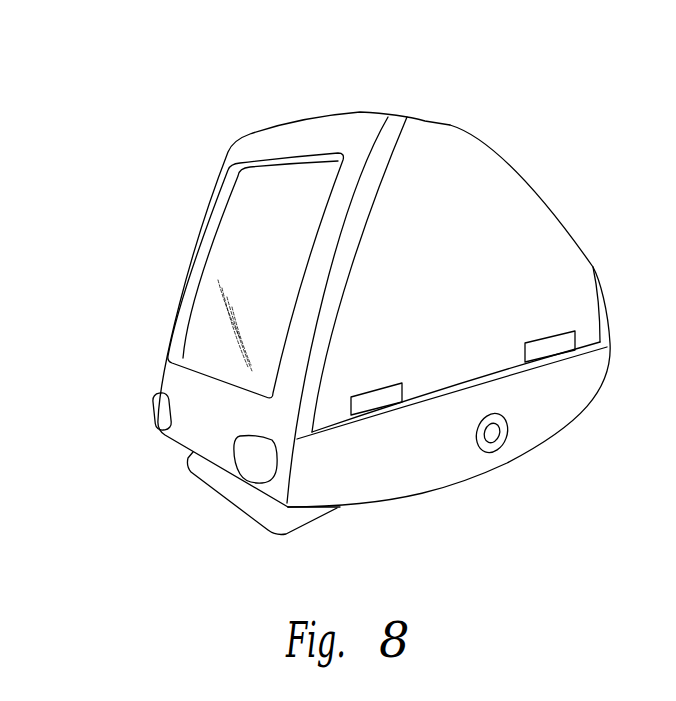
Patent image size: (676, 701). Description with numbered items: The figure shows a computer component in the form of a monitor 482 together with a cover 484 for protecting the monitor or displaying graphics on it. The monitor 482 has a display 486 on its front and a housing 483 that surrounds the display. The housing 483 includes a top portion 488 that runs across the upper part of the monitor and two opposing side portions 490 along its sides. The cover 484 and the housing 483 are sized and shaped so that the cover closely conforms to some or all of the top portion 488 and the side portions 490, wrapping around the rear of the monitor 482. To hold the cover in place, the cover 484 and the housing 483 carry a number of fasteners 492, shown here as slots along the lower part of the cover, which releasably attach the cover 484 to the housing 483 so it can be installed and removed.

The monitor 482 is at (150, 118).
The housing 483 is at (394, 118).
The cover 484 is at (545, 208).
The display 486 is at (249, 258).
The top portion 488 is at (326, 109).
The side portions 490 is at (161, 363).
The fasteners 492 is at (380, 400).